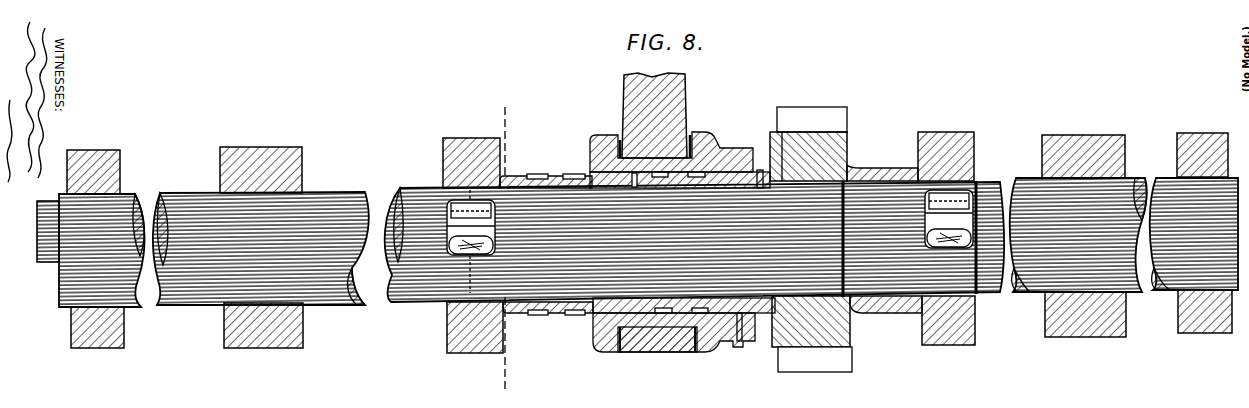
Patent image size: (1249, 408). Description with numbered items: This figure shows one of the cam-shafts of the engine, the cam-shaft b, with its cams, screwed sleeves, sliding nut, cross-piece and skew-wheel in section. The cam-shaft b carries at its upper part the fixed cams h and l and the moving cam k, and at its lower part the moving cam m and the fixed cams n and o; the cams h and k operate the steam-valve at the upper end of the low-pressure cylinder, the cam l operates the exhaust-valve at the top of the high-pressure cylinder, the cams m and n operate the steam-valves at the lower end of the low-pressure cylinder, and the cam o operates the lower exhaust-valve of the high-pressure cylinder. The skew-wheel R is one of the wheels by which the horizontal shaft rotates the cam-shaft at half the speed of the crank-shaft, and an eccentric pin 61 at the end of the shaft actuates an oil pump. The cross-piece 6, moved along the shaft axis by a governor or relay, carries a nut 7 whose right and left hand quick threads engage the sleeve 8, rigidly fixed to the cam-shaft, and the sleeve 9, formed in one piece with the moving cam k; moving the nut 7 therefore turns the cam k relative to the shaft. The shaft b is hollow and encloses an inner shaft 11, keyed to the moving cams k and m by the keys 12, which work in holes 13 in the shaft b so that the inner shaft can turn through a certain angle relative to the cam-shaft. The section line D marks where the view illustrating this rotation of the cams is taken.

The eccentric pin 61 is at (50, 199).
The fixed cam h is at (108, 153).
The fixed cam l is at (280, 150).
The cam-shaft b is at (353, 192).
The inner shaft 11 is at (393, 208).
The moving cam k is at (452, 152).
The section line D D is at (490, 245).
The key 12 is at (458, 244).
The hole 13 is at (503, 175).
The sleeve 9 is at (556, 177).
The nut 7 is at (600, 136).
The cross-piece 6 is at (682, 100).
The sleeve 8 is at (760, 171).
The skew-wheel R is at (846, 126).
The moving cam m is at (946, 141).
The fixed cam o is at (1086, 139).
The fixed cam n is at (1205, 138).